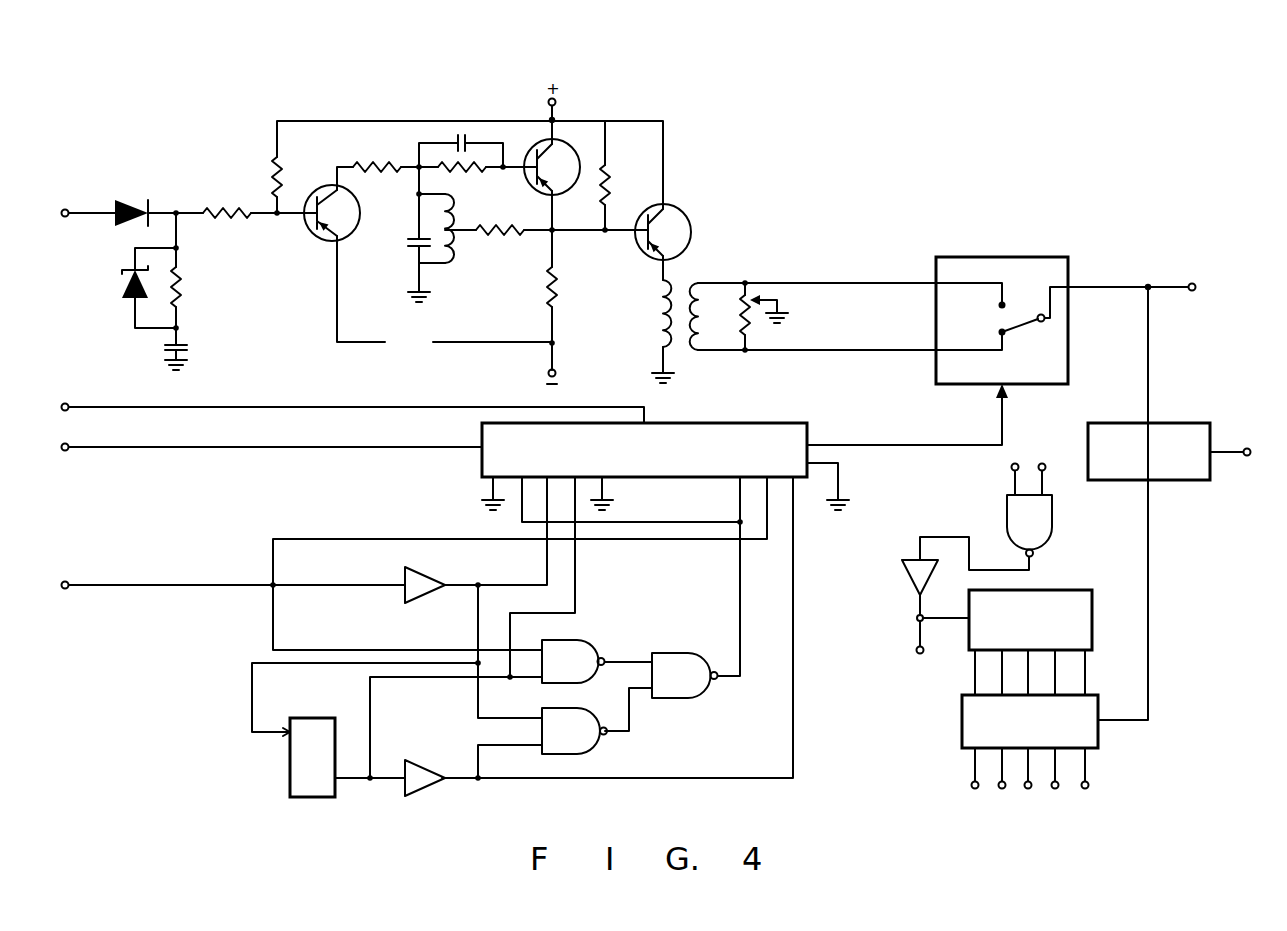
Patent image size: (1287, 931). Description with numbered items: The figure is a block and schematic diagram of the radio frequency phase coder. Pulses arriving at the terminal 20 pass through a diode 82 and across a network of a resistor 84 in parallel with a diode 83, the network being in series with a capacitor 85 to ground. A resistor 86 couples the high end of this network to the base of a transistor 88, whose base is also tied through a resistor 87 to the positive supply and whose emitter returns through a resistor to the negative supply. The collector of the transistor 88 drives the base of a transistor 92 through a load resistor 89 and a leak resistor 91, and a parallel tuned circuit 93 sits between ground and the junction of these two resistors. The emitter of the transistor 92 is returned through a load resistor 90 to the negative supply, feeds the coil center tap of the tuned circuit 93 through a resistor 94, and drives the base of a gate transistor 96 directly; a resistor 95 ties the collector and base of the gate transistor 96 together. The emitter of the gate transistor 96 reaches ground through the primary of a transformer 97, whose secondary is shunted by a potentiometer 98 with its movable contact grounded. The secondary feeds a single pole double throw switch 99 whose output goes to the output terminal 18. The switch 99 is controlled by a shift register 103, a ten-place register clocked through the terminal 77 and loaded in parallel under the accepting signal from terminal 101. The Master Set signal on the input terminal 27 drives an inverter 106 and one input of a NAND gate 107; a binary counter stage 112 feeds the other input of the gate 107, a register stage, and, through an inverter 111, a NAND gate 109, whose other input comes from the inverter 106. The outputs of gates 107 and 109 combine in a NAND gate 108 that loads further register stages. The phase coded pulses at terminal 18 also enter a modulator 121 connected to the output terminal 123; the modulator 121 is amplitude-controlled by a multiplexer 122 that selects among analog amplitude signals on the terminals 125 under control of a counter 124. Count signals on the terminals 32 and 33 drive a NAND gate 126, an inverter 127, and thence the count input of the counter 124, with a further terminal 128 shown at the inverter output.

The terminal 20 is at (66, 211).
The diode 82 is at (146, 205).
The diode 83 is at (120, 284).
The resistor 84 is at (180, 285).
The capacitor 85 is at (184, 350).
The resistor 86 is at (210, 212).
The resistor 87 is at (279, 185).
The transistor 88 is at (346, 216).
The load resistor 89 is at (369, 166).
The load resistor 90 is at (557, 290).
The leak resistor 91 is at (468, 172).
The transistor 92 is at (563, 163).
The parallel tuned circuit 93 is at (453, 257).
The resistor 94 is at (502, 227).
The resistor 95 is at (612, 198).
The gate transistor 96 is at (675, 222).
The transformer 97 is at (664, 312).
The potentiometer 98 is at (752, 328).
The single pole double throw switch 99 is at (996, 262).
The output terminal 18 is at (1190, 283).
The modulator 121 is at (1150, 440).
The output terminal 123 is at (1252, 450).
The terminal 33 is at (1013, 463).
The terminal 32 is at (1050, 455).
The NAND gate 126 is at (1035, 528).
The inverter 127 is at (918, 570).
The terminal 128 is at (920, 655).
The counter 124 is at (1040, 602).
The multiplexer 122 is at (1085, 718).
The terminals 125 is at (975, 782).
The terminal 101 is at (66, 404).
The terminal 77 is at (66, 444).
The input terminal 27 is at (66, 582).
The shift register 103 is at (742, 440).
The inverter 106 is at (420, 590).
The NAND gate 107 is at (572, 652).
The NAND gate 108 is at (675, 665).
The NAND gate 109 is at (570, 722).
The inverter 111 is at (420, 780).
The binary counter stage 112 is at (305, 730).